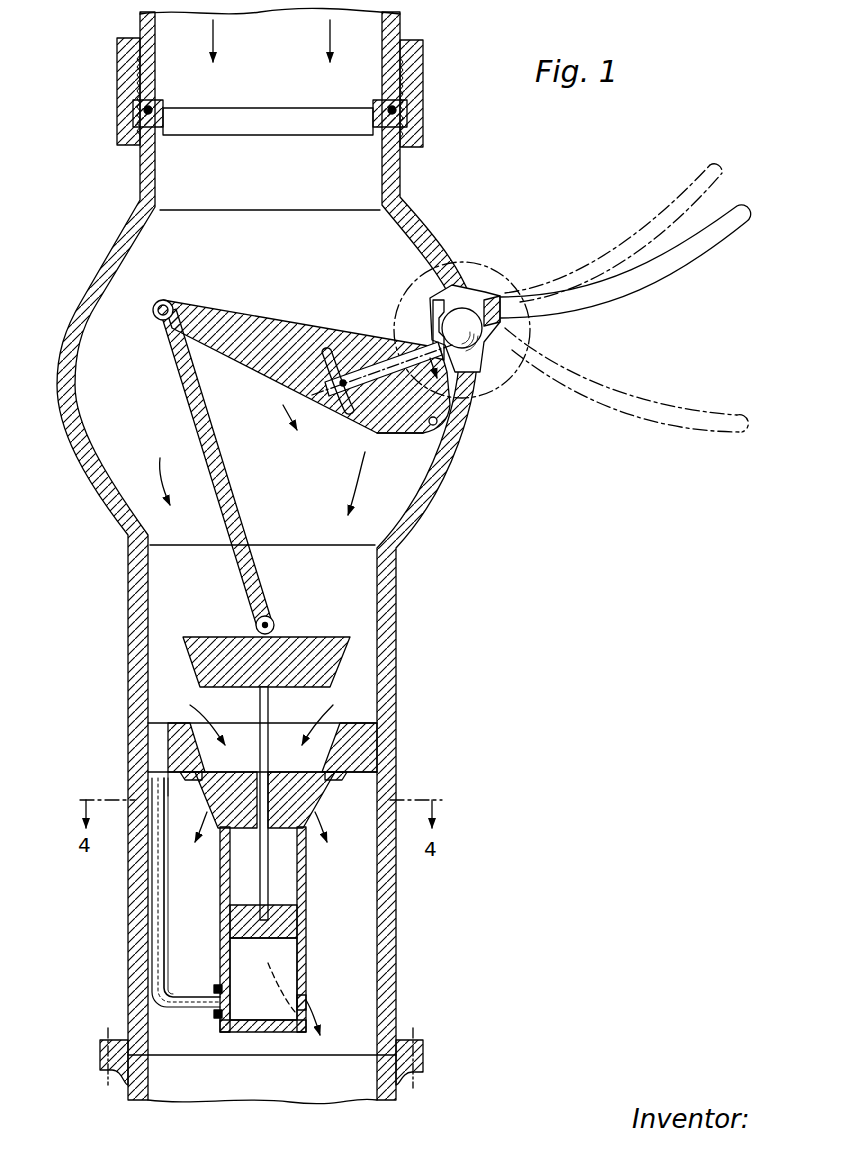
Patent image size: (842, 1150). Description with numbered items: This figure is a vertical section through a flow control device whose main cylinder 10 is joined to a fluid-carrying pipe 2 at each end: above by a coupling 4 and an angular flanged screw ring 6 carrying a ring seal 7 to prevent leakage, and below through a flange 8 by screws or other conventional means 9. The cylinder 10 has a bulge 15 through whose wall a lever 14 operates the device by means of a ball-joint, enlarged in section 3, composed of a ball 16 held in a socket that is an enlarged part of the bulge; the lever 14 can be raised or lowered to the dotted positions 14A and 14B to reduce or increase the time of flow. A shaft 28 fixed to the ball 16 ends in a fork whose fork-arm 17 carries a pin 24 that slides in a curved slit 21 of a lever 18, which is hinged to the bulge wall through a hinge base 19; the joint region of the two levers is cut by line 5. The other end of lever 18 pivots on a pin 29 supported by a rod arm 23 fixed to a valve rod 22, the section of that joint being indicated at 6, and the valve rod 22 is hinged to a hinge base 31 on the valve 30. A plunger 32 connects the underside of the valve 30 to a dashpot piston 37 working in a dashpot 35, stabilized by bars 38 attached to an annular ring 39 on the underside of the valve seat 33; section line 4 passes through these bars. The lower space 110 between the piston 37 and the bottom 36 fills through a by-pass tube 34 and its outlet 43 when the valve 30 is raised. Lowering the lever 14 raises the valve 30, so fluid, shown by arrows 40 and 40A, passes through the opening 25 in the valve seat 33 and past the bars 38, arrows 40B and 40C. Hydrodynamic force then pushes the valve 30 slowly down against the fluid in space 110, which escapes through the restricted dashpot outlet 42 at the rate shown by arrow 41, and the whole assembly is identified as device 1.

The valve housing 1 is at (267, 556).
The pipe 2 is at (398, 30).
The section 3 is at (476, 264).
The coupling 4 is at (410, 80).
The line 5 is at (365, 406).
The angular flanged screw ring 6 is at (166, 122).
The ring seal 7 is at (151, 107).
The flange 8 is at (418, 1042).
The screws or other conventional means 9 is at (100, 1070).
The cylinder 10 is at (392, 174).
The lever 14 is at (698, 252).
The lever position 14A is at (680, 213).
The lever position 14B is at (722, 425).
The bulge 15 is at (462, 440).
The ball 16 is at (482, 347).
The fork-arm 17 is at (402, 349).
The lever 18 is at (374, 410).
The hinge base 19 is at (430, 426).
The curved slit 21 is at (340, 354).
The valve rod 22 is at (234, 512).
The rod arm 23 is at (178, 347).
The pin 24 is at (326, 425).
The opening 25 is at (207, 742).
The shaft 28 is at (404, 346).
The pin 29 is at (168, 305).
The valve 30 is at (300, 650).
The hinge base 31 is at (277, 632).
The plunger 32 is at (269, 710).
The valve seat 33 is at (398, 720).
The by-pass tube 34 is at (155, 905).
The dashpot 35 is at (306, 866).
The bottom 36 is at (258, 1032).
The dashpot piston 37 is at (246, 915).
The bars 38 is at (310, 780).
The annular ring 39 is at (182, 794).
The arrows 40 is at (330, 32).
The arrows 40A is at (283, 483).
The arrows 40B is at (281, 716).
The arrows 40C is at (277, 842).
The arrow 41 is at (312, 1010).
The dashpot outlet 42 is at (304, 1006).
The outlet 43 is at (223, 1001).
The lower space 110 is at (290, 956).